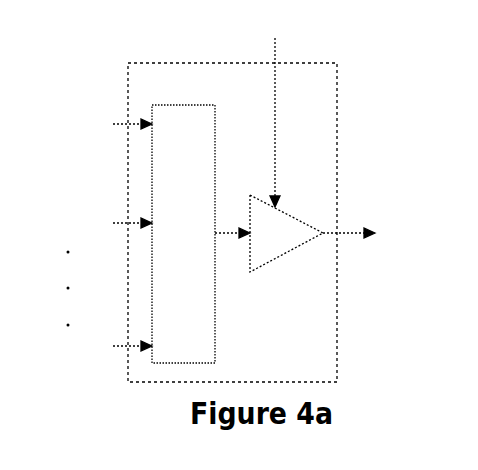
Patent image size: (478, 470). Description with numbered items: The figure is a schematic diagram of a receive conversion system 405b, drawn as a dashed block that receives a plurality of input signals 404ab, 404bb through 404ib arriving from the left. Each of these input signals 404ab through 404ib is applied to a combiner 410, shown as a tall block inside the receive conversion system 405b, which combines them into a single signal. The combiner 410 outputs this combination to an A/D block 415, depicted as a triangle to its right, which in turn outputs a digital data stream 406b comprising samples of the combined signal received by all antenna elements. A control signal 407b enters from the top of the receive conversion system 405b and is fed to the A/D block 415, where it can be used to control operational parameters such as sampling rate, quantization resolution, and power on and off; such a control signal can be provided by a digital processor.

The receive conversion system 405b is at (218, 205).
The combiner 410 is at (183, 218).
The control signal 407b is at (276, 108).
The input signal 404ab is at (92, 123).
The input signal 404bb is at (92, 223).
The input signal 404ib is at (96, 345).
The digital data stream 406b is at (384, 233).
The A/D block 415 is at (286, 252).